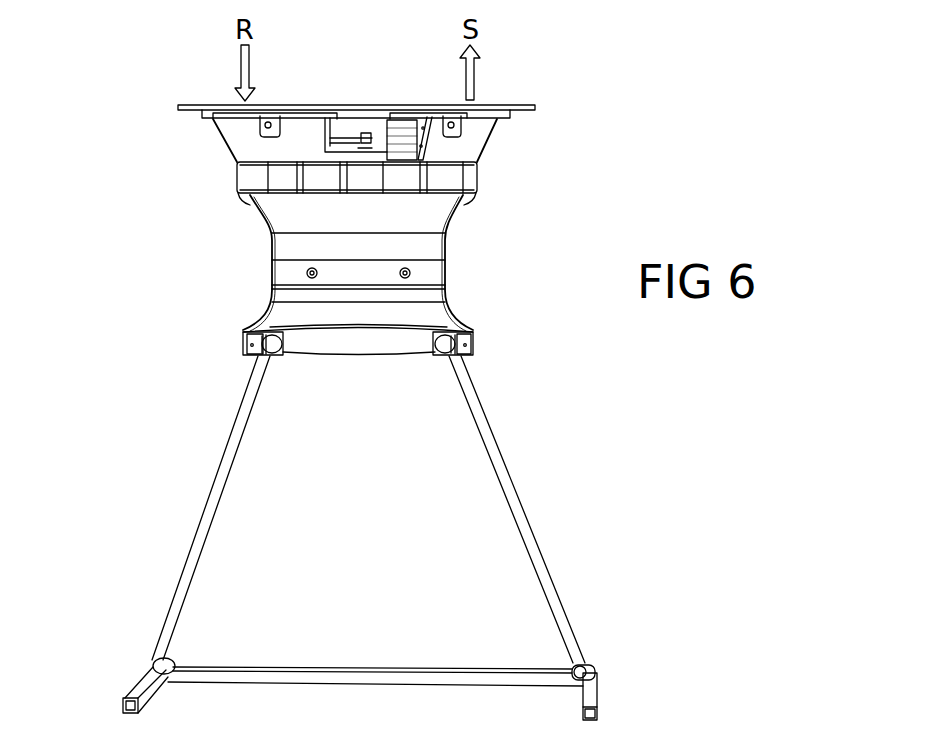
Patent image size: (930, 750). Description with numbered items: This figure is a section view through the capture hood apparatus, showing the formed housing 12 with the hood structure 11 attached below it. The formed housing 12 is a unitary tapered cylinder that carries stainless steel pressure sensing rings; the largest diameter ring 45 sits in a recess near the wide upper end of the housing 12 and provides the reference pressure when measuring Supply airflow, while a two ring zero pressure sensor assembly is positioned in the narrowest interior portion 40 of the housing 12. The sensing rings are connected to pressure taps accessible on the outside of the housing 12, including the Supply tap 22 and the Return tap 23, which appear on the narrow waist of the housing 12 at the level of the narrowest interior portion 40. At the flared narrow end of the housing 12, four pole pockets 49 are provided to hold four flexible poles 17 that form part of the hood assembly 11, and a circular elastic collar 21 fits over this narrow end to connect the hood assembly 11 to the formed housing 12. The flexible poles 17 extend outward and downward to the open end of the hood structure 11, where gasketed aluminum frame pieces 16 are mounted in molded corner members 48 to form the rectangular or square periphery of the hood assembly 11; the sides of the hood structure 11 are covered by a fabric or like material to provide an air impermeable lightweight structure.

The pressure sensing ring 45 is at (483, 110).
The formed housing 12 is at (237, 313).
The narrowest interior portion 40 is at (437, 278).
The pressure tap 23 is at (298, 268).
The pressure tap 22 is at (420, 270).
The elastic collar 21 is at (482, 345).
The pole pocket 49 is at (447, 340).
The flexible pole 17 is at (222, 478).
The hood structure 11 is at (538, 522).
The molded corner member 48 is at (150, 667).
The frame piece 16 is at (592, 695).